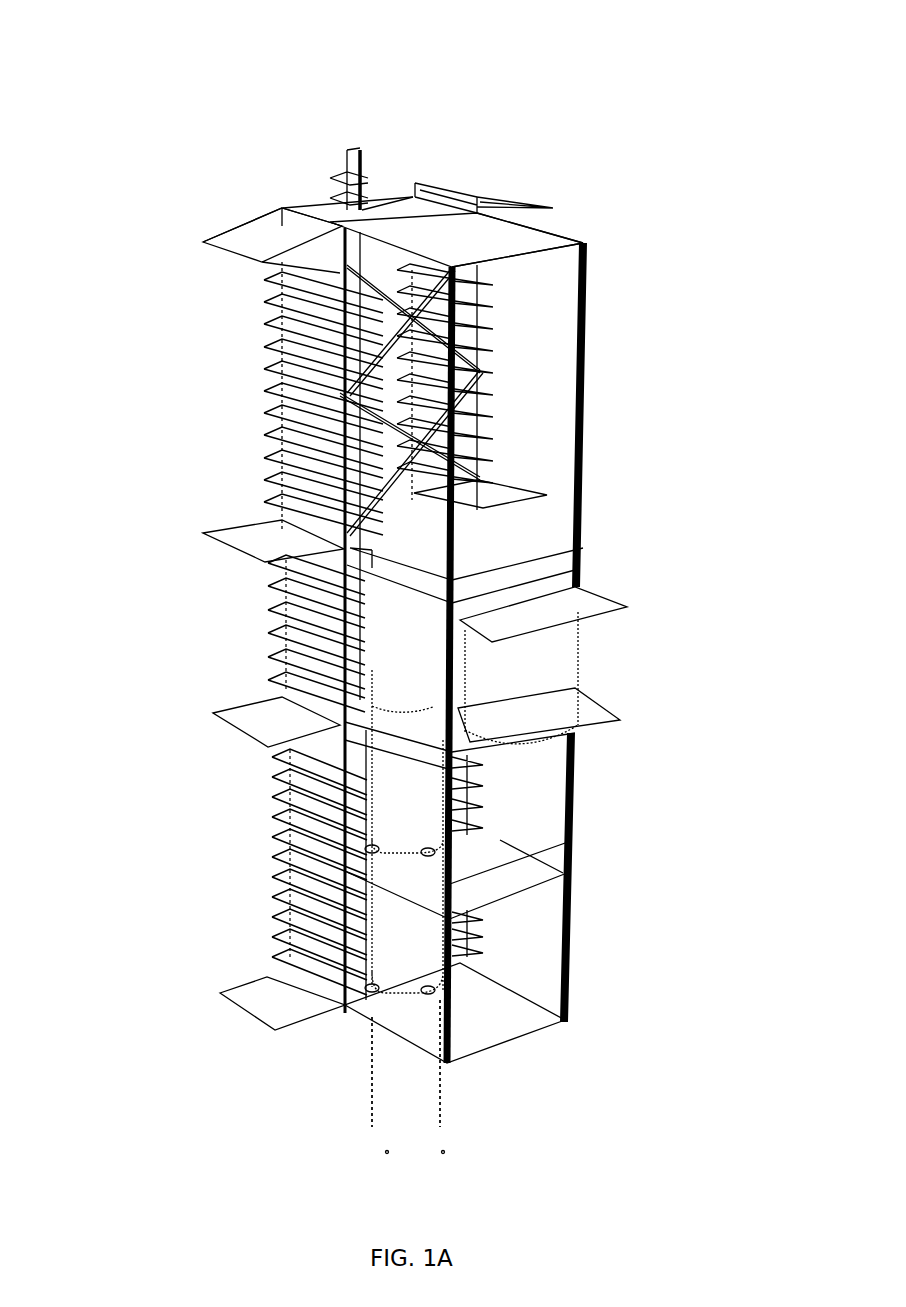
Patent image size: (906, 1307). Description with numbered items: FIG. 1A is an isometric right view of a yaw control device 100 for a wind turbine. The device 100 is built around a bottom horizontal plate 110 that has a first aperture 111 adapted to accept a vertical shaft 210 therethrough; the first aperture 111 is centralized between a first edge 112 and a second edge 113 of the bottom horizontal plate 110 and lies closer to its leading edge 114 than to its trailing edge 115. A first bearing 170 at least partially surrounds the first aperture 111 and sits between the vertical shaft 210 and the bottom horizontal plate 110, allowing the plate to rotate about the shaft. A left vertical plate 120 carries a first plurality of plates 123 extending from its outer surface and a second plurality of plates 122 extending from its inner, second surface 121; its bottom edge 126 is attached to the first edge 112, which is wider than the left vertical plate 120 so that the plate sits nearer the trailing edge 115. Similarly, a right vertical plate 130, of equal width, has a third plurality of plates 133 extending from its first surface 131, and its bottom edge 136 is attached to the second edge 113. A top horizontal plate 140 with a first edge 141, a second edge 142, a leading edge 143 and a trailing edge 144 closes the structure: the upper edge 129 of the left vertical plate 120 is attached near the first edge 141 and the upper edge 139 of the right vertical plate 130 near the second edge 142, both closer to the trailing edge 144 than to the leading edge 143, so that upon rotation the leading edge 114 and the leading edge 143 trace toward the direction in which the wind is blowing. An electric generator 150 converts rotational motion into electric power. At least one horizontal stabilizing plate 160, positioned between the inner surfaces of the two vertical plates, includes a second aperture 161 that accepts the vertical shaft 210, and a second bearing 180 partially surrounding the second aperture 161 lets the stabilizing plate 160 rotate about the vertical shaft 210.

The yaw control device 100 is at (790, 95).
The bottom horizontal plate 110 is at (567, 1017).
The first aperture 111 is at (410, 990).
The first edge 112 is at (508, 977).
The second edge 113 is at (363, 1007).
The leading edge 114 is at (537, 1032).
The trailing edge 115 is at (267, 977).
The left vertical plate 120 is at (480, 345).
The second surface 121 is at (468, 447).
The second plurality of plates 122 is at (490, 313).
The first plurality of plates 123 is at (493, 423).
The bottom edge 126 is at (498, 952).
The upper edge 129 is at (480, 197).
The right vertical plate 130 is at (283, 223).
The first surface 131 is at (303, 323).
The third plurality of plates 133 is at (203, 242).
The bottom edge 136 is at (350, 1010).
The upper edge 139 is at (340, 235).
The top horizontal plate 140 is at (582, 243).
The first edge 141 is at (550, 236).
The second edge 142 is at (395, 250).
The leading edge 143 is at (512, 253).
The trailing edge 144 is at (392, 196).
The electric generator 150 is at (577, 677).
The horizontal stabilizing plate 160 is at (543, 532).
The second aperture 161 is at (427, 853).
The first bearing 170 is at (455, 995).
The second bearing 180 is at (370, 845).
The vertical shaft 210 is at (423, 1093).